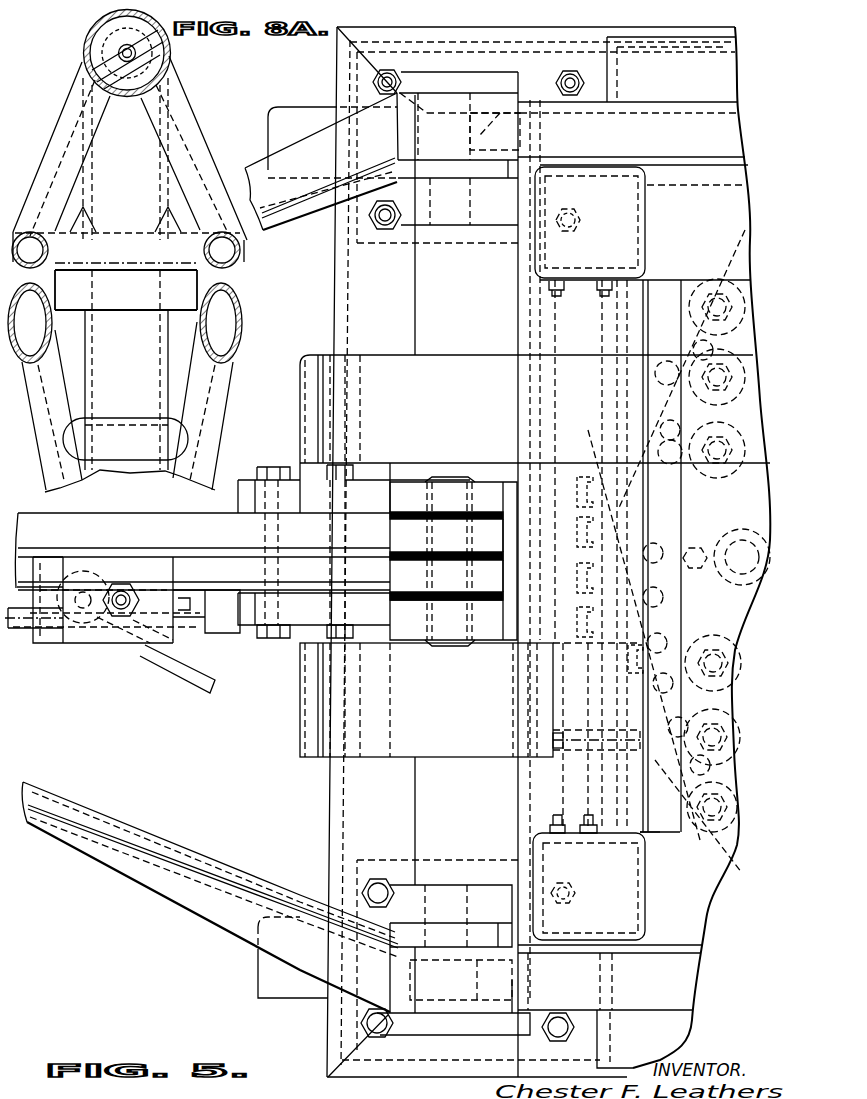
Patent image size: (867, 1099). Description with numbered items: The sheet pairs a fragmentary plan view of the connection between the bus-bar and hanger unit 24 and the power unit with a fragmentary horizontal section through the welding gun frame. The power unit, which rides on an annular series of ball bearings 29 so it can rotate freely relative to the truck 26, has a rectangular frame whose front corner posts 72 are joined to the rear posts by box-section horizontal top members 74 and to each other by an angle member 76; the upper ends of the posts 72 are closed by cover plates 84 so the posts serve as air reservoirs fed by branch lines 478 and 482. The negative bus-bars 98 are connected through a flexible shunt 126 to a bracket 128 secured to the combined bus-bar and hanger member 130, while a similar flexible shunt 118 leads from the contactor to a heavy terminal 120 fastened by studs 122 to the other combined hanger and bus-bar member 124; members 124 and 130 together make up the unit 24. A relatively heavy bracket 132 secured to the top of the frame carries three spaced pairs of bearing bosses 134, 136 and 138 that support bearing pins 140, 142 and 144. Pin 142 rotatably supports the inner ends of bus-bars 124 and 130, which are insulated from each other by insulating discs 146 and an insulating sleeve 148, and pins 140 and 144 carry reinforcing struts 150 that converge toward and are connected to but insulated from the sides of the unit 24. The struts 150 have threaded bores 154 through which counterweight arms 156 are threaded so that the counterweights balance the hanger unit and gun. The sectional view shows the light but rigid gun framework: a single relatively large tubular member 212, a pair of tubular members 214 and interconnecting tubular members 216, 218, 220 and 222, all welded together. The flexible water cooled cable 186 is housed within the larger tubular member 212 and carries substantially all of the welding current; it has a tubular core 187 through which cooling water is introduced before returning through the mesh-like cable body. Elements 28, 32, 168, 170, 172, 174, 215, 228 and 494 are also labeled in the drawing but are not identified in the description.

In FIG. 5, the bus-bar and hanger unit 24 is at (135, 513).
In FIG. 5, the truck 26 is at (597, 1050).
In FIG. 5, the side plate 28 is at (338, 815).
In FIG. 5, the ball bearings 29 is at (665, 520).
In FIG. 5, the guide block 32 is at (290, 107).
In FIG. 5, the front corner posts 72 is at (582, 168).
In FIG. 5, the horizontal top member 74 is at (688, 170).
In FIG. 5, the angle member 76 is at (670, 833).
In FIG. 5, the cover plates 84 is at (569, 242).
In FIG. 5, the negative bus-bars 98 is at (588, 470).
In FIG. 5, the flexible shunt 118 is at (448, 357).
In FIG. 5, the heavy terminal 120 is at (290, 467).
In FIG. 5, the studs 122 is at (262, 477).
In FIG. 5, the combined hanger and bus-bar member 124 is at (205, 500).
In FIG. 5, the flexible shunt 126 is at (405, 757).
In FIG. 5, the bracket 128 is at (300, 625).
In FIG. 5, the combined bus-bar and hanger member 130 is at (228, 625).
In FIG. 5, the bracket 132 is at (415, 305).
In FIG. 5, the bearing bosses 134 is at (488, 887).
In FIG. 5, the bearing bosses 136 is at (405, 480).
In FIG. 5, the bearing bosses 138 is at (480, 75).
In FIG. 5, the bearing pin 140 is at (400, 1050).
In FIG. 5, the bearing pin 142 is at (440, 480).
In FIG. 5, the bearing pin 144 is at (445, 30).
In FIG. 5, the insulating discs 146 is at (407, 550).
In FIG. 5, the insulating sleeve 148 is at (487, 500).
In FIG. 5, the reinforcing struts 150 is at (275, 205).
In FIG. 5, the threaded bores 154 is at (480, 140).
In FIG. 5, the counterweight arms 156 is at (655, 100).
In FIG. 5, the pivot housing 168 is at (90, 648).
In FIG. 5, the stub shaft 170 is at (45, 648).
In FIG. 5, the pivot bolt 172 is at (113, 585).
In FIG. 5, the lever arm 174 is at (190, 675).
In FIG. 8A, the flexible water cooled cable 186 is at (87, 38).
In FIG. 8A, the tubular core 187 is at (100, 60).
In FIG. 8A, the tubular member 212 is at (170, 52).
In FIG. 8A, the tubular members 214 is at (18, 232).
In FIG. 8A, the cross bracket 215 is at (135, 433).
In FIG. 8A, the interconnecting tubular member 216 is at (238, 287).
In FIG. 8A, the interconnecting tubular member 218 is at (55, 130).
In FIG. 8A, the interconnecting tubular member 220 is at (122, 236).
In FIG. 8A, the interconnecting tubular member 222 is at (243, 323).
In FIG. 5, the bolt head 228 is at (550, 822).
In FIG. 5, the branch line 478 is at (590, 815).
In FIG. 5, the branch line 482 is at (582, 315).
In FIG. 5, the bolt head 494 is at (563, 297).